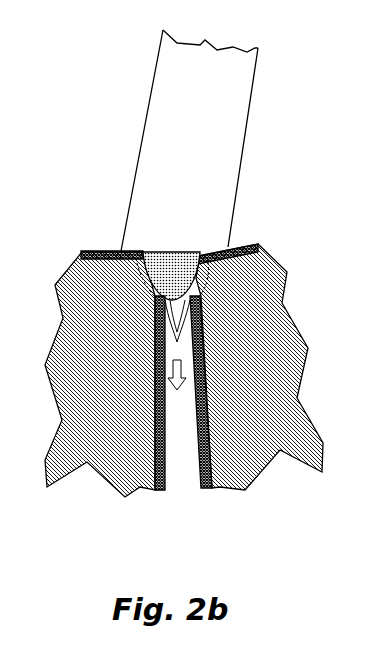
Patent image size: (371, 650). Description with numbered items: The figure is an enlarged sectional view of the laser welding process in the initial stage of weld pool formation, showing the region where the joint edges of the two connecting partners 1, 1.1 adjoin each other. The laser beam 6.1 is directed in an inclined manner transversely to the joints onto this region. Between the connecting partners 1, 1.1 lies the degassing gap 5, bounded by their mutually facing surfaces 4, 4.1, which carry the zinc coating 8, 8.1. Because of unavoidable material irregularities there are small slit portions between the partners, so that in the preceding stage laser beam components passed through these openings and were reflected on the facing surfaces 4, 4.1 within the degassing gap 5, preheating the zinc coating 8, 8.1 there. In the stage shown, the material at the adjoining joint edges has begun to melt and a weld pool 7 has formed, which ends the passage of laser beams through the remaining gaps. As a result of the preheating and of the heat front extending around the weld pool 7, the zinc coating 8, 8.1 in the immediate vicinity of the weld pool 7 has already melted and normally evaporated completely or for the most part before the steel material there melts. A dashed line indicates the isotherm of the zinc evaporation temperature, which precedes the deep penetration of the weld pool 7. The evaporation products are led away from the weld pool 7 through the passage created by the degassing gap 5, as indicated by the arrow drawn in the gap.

The connecting partner 1 is at (203, 248).
The connecting partner 1.1 is at (62, 313).
The mutually facing surface 4 is at (196, 470).
The mutually facing surface 4.1 is at (170, 470).
The degassing gap 5 is at (188, 430).
The laser beam 6.1 is at (211, 117).
The weld pool 7 is at (177, 252).
The zinc coating 8 is at (240, 238).
The zinc coating 8.1 is at (105, 250).